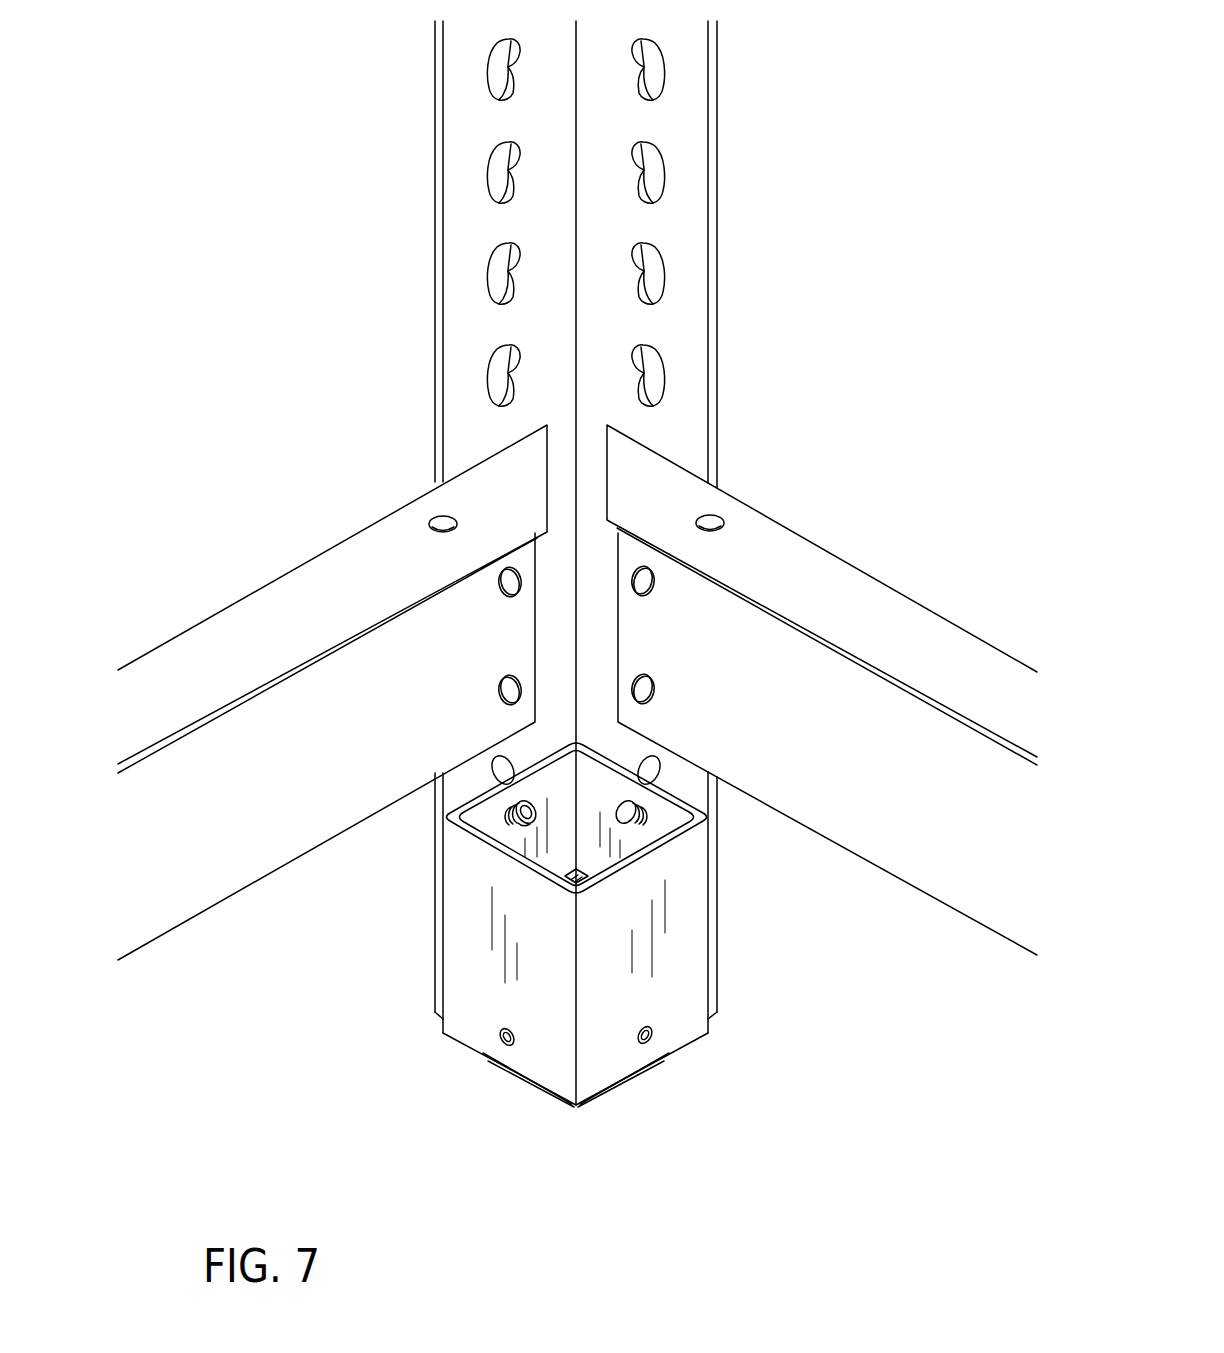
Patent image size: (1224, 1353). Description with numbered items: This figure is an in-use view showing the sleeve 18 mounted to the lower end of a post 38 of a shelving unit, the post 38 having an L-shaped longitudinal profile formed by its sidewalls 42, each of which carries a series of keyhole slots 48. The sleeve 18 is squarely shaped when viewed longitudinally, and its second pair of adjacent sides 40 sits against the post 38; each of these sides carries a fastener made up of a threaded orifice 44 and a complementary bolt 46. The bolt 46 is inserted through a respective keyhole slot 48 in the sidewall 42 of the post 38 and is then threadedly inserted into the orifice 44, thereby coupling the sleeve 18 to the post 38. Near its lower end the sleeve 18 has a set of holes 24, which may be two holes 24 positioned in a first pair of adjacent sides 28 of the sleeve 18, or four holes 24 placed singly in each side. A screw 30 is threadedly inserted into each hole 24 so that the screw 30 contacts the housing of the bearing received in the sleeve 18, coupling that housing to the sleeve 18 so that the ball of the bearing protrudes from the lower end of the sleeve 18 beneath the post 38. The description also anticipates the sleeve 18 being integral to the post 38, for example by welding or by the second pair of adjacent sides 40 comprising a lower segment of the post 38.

The sleeve 18 is at (680, 950).
The holes 24 is at (513, 1046).
The first pair of adjacent sides 28 is at (602, 1052).
The screws 30 is at (500, 1043).
The post 38 is at (722, 372).
The second pair of adjacent sides 40 is at (660, 820).
The sidewall 42 is at (472, 410).
The orifice 44 is at (518, 815).
The bolt 46 is at (525, 822).
The keyhole slot 48 is at (503, 768).